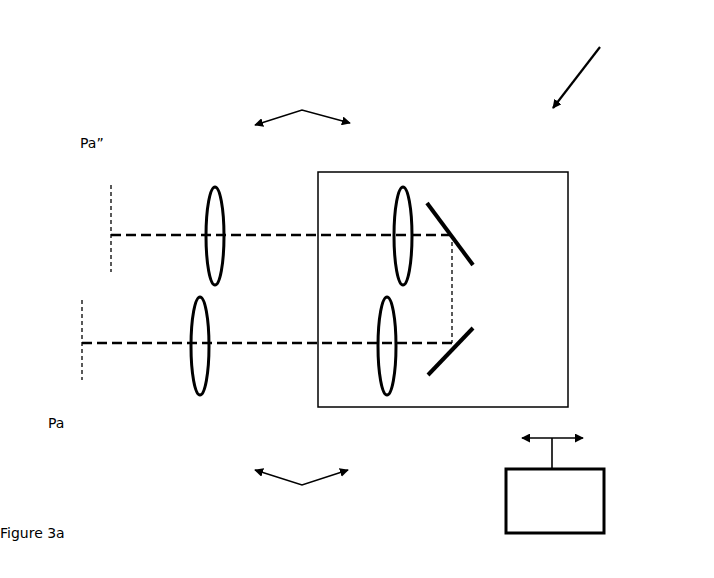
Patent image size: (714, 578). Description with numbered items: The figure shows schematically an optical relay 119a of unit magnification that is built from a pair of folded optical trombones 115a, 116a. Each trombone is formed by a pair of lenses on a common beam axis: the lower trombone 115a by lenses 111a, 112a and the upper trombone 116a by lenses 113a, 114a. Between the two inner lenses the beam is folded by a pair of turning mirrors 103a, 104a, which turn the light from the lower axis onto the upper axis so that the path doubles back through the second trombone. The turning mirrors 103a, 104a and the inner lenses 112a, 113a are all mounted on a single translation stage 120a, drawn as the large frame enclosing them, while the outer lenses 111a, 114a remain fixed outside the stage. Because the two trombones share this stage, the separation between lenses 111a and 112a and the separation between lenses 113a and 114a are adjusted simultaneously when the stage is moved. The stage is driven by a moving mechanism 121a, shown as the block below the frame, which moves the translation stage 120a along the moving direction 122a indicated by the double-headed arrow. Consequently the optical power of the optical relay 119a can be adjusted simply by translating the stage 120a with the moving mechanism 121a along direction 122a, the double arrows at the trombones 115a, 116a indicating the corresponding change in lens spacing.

The turning mirror 103a is at (447, 360).
The turning mirror 104a is at (445, 222).
The lens 111a is at (203, 370).
The lens 112a is at (392, 372).
The lens 113a is at (406, 200).
The lens 114a is at (216, 203).
The folded optical trombone 115a is at (301, 490).
The folded optical trombone 116a is at (302, 99).
The optical relay 119a is at (600, 58).
The translation stage 120a is at (562, 262).
The moving mechanism 121a is at (598, 505).
The moving direction 122a is at (585, 450).